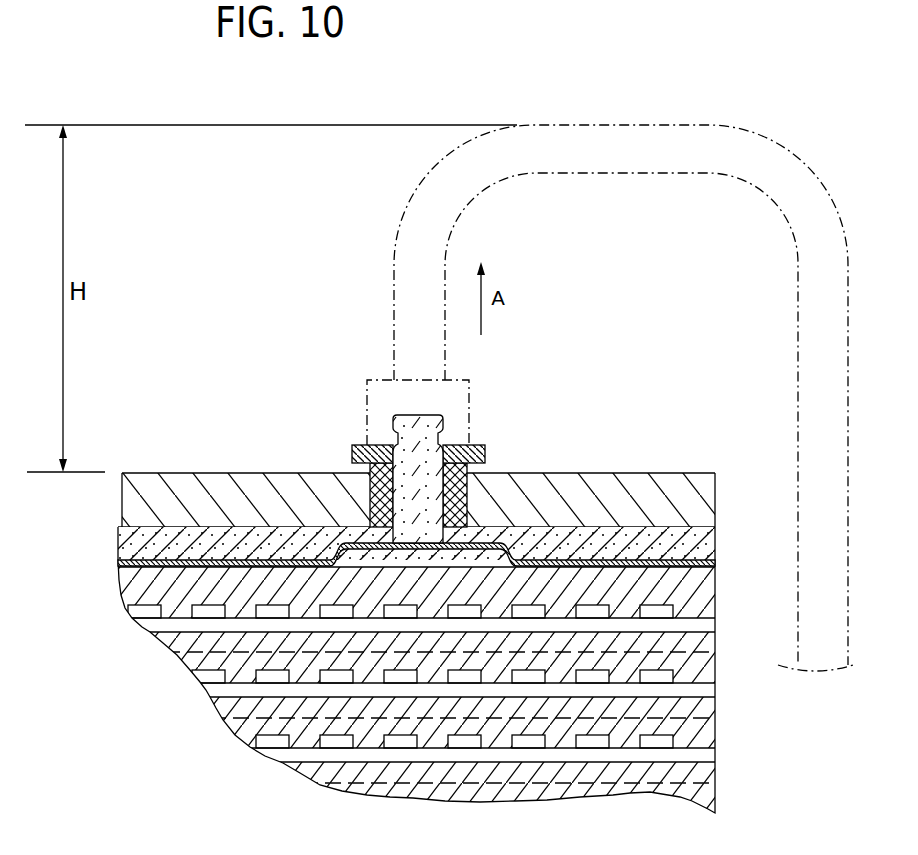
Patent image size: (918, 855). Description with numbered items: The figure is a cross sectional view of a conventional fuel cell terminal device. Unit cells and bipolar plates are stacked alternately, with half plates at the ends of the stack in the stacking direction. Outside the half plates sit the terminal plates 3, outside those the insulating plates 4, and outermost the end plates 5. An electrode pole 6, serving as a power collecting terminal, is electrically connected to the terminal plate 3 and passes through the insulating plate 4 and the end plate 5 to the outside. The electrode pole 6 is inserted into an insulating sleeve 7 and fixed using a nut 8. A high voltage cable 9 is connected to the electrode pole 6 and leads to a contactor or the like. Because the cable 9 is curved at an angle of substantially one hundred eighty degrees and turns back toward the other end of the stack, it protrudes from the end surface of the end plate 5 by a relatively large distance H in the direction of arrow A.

The terminal plate 3 is at (708, 572).
The insulating plate 4 is at (708, 546).
The end plate 5 is at (705, 499).
The electrode pole 6 is at (412, 433).
The insulating sleeve 7 is at (467, 500).
The nut 8 is at (469, 446).
The high voltage cable 9 is at (410, 318).